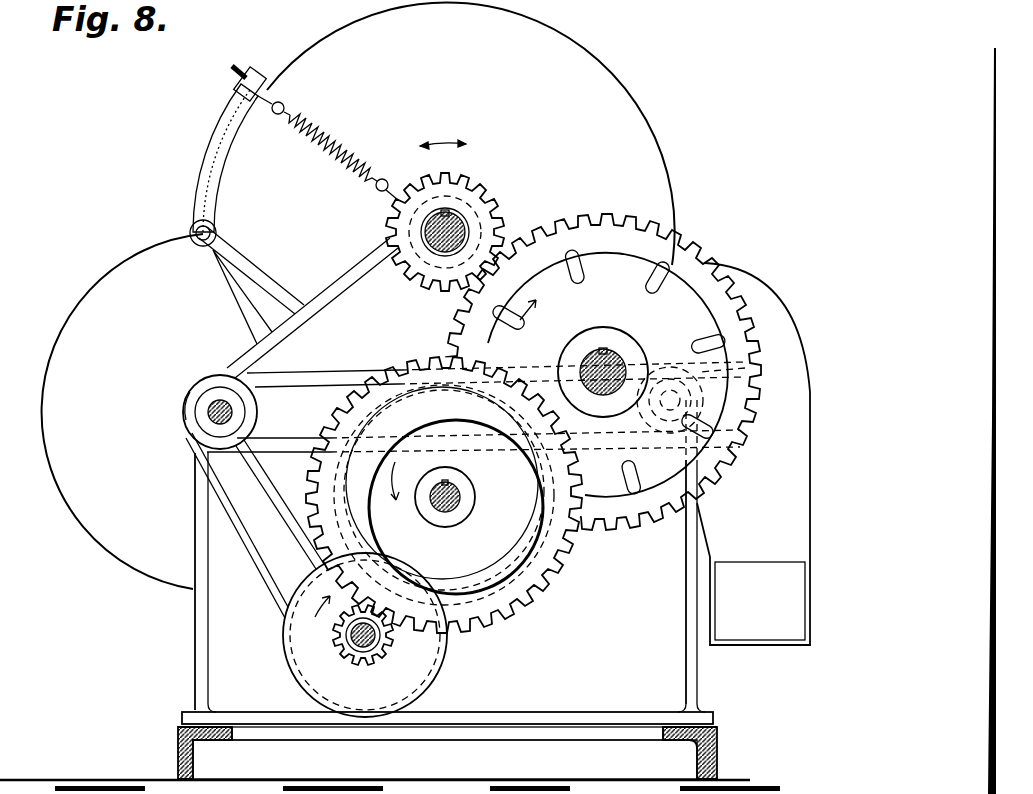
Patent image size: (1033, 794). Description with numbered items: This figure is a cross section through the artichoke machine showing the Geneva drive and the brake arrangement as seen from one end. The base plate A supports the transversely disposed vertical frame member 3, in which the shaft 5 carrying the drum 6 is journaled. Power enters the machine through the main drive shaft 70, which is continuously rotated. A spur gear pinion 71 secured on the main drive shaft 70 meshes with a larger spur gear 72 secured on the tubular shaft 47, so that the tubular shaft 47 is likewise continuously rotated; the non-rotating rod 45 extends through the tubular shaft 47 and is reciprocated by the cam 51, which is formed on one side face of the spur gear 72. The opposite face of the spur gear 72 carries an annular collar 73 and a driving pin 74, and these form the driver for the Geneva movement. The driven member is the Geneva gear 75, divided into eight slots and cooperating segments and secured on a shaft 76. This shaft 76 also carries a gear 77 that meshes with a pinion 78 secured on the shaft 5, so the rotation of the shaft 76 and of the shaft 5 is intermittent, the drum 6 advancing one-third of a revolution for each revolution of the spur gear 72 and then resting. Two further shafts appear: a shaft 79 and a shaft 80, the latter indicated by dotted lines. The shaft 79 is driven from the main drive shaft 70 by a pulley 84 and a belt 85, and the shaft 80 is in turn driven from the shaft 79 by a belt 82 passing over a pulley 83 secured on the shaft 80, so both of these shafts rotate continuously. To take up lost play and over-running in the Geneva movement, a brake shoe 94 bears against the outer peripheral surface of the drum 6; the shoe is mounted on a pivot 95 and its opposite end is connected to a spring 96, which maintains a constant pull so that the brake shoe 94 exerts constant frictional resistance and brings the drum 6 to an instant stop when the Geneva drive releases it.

The vertical frame member 3 is at (198, 649).
The shaft 5 is at (452, 227).
The drum 6 is at (597, 76).
The rod 45 is at (452, 490).
The tubular shaft 47 is at (452, 505).
The cam 51 is at (465, 578).
The main drive shaft 70 is at (348, 650).
The spur gear pinion 71 is at (358, 662).
The spur gear 72 is at (320, 521).
The annular collar 73 is at (545, 592).
The driving pin 74 is at (562, 546).
The Geneva gear 75 is at (608, 373).
The shaft 76 is at (612, 362).
The gear 77 is at (605, 215).
The pinion 78 is at (490, 210).
The shaft 79 is at (216, 418).
The shaft 80 is at (705, 408).
The belt 82 is at (314, 380).
The pulley 83 is at (745, 368).
The pulley 84 is at (312, 588).
The belt 85 is at (268, 588).
The brake shoe 94 is at (222, 146).
The pivot 95 is at (197, 246).
The spring 96 is at (332, 161).
The base plate A is at (720, 746).